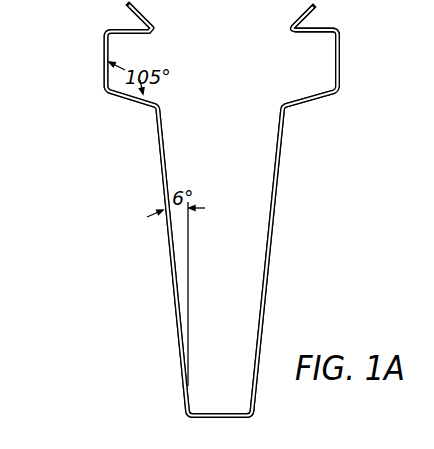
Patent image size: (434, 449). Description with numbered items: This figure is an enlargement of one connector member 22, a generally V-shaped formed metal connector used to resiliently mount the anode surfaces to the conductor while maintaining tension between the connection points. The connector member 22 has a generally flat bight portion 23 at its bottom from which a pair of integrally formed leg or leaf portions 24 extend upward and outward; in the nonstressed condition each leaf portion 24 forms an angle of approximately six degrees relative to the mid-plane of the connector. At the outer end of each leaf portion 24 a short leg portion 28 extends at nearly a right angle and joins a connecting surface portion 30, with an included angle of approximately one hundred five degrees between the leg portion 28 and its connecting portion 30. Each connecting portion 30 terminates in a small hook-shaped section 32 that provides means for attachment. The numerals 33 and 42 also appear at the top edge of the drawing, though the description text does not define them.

The connector member 22 is at (293, 196).
The bight portion 23 is at (201, 412).
The leaf portion 24 is at (170, 258).
The leg portion 28 is at (128, 100).
The connecting surface portion 30 is at (103, 61).
The hook-shaped section 32 is at (156, 24).
The hook tip 33 is at (150, 8).
The support member 42 is at (359, 8).